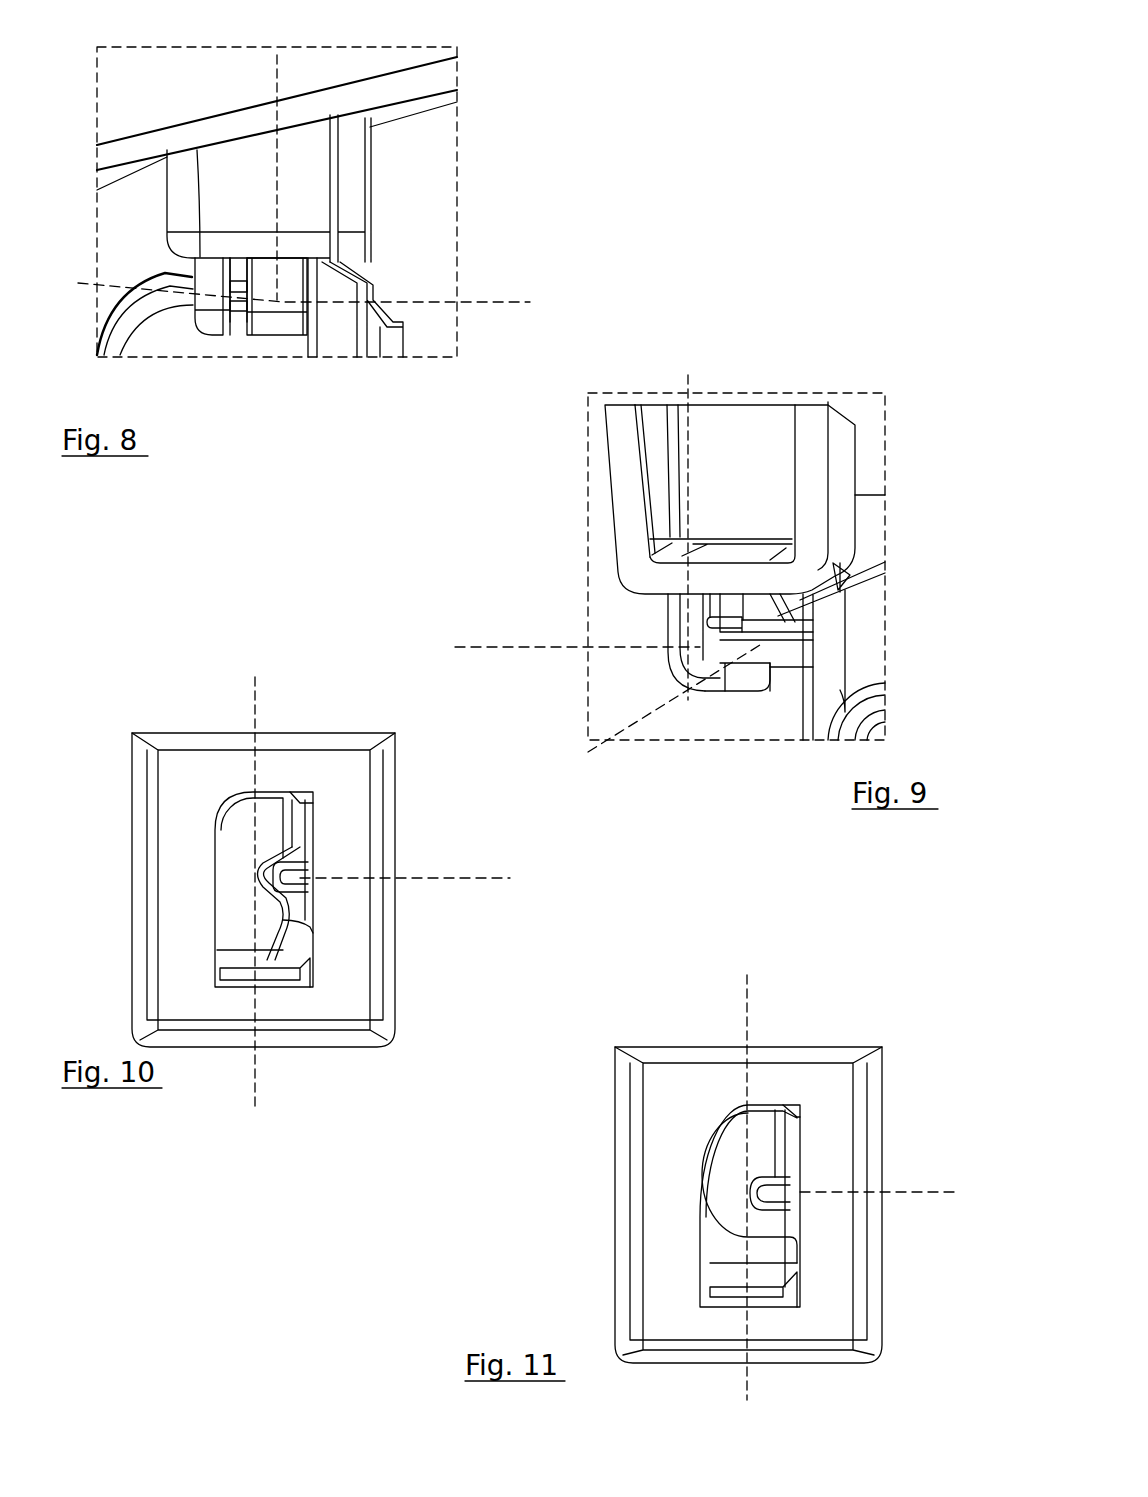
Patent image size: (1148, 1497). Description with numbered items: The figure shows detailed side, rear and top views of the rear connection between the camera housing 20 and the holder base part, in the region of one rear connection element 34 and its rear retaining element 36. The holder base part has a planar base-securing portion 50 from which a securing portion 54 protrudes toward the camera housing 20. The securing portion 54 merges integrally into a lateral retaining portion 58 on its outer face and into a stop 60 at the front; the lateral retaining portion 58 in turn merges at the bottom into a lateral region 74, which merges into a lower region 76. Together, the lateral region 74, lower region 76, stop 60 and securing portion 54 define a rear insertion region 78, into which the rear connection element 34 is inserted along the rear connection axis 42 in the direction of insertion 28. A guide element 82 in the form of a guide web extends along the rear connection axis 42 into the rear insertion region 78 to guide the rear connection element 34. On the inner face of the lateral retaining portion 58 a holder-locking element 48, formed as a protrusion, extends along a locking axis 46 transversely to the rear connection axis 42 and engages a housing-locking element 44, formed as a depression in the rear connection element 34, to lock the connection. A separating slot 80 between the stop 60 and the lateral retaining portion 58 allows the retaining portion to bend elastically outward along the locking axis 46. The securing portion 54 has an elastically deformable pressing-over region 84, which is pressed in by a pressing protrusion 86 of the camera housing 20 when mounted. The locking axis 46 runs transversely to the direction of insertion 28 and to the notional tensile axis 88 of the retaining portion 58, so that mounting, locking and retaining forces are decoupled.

In FIG. 8, the camera housing 20 is at (116, 350).
In FIG. 9, the camera housing 20 is at (880, 645).
In FIG. 8, the direction of insertion 28 is at (480, 223).
In FIG. 9, the direction of insertion 28 is at (826, 750).
In FIG. 10, the direction of insertion 28 is at (165, 645).
In FIG. 11, the direction of insertion 28 is at (665, 975).
In FIG. 8, the rear connection element 34 is at (238, 322).
In FIG. 9, the rear connection element 34 is at (825, 795).
In FIG. 10, the rear connection element 34 is at (236, 852).
In FIG. 8, the rear retaining element 36 is at (208, 170).
In FIG. 9, the rear retaining element 36 is at (612, 531).
In FIG. 10, the rear retaining element 36 is at (318, 867).
In FIG. 11, the rear retaining element 36 is at (702, 1213).
In FIG. 8, the rear connection axis 42 is at (530, 302).
In FIG. 9, the rear connection axis 42 is at (585, 748).
In FIG. 10, the rear connection axis 42 is at (257, 1110).
In FIG. 11, the rear connection axis 42 is at (747, 985).
In FIG. 9, the housing-locking element 44 is at (743, 594).
In FIG. 10, the housing-locking element 44 is at (253, 875).
In FIG. 8, the locking axis 46 is at (78, 283).
In FIG. 9, the locking axis 46 is at (488, 645).
In FIG. 10, the locking axis 46 is at (438, 880).
In FIG. 11, the locking axis 46 is at (912, 1192).
In FIG. 9, the holder-locking element 48 is at (707, 621).
In FIG. 10, the holder-locking element 48 is at (307, 883).
In FIG. 11, the holder-locking element 48 is at (793, 1197).
In FIG. 8, the base-securing portion 50 is at (430, 82).
In FIG. 9, the base-securing portion 50 is at (872, 427).
In FIG. 10, the base-securing portion 50 is at (383, 770).
In FIG. 11, the base-securing portion 50 is at (876, 1045).
In FIG. 8, the securing portion 54 is at (177, 197).
In FIG. 9, the securing portion 54 is at (623, 427).
In FIG. 10, the securing portion 54 is at (153, 787).
In FIG. 11, the securing portion 54 is at (635, 1120).
In FIG. 8, the lateral retaining portion 58 is at (312, 340).
In FIG. 9, the lateral retaining portion 58 is at (668, 670).
In FIG. 10, the lateral retaining portion 58 is at (307, 843).
In FIG. 11, the lateral retaining portion 58 is at (790, 1157).
In FIG. 8, the stop 60 is at (200, 337).
In FIG. 9, the stop 60 is at (660, 598).
In FIG. 10, the stop 60 is at (245, 985).
In FIG. 11, the stop 60 is at (720, 1297).
In FIG. 8, the lateral region 74 is at (290, 284).
In FIG. 9, the lateral region 74 is at (717, 638).
In FIG. 10, the lateral region 74 is at (300, 820).
In FIG. 11, the lateral region 74 is at (783, 1130).
In FIG. 8, the lower region 76 is at (272, 327).
In FIG. 9, the lower region 76 is at (733, 690).
In FIG. 11, the lower region 76 is at (723, 1175).
In FIG. 9, the rear insertion region 78 is at (713, 567).
In FIG. 10, the rear insertion region 78 is at (283, 950).
In FIG. 11, the rear insertion region 78 is at (717, 1243).
In FIG. 8, the separating slot 80 is at (238, 280).
In FIG. 10, the separating slot 80 is at (300, 953).
In FIG. 11, the separating slot 80 is at (793, 1263).
In FIG. 8, the guide element 82 is at (362, 309).
In FIG. 9, the guide element 82 is at (800, 607).
In FIG. 9, the pressing-over region 84 is at (833, 560).
In FIG. 9, the pressing protrusion 86 is at (833, 587).
In FIG. 8, the tensile axis 88 is at (275, 85).
In FIG. 9, the tensile axis 88 is at (693, 460).